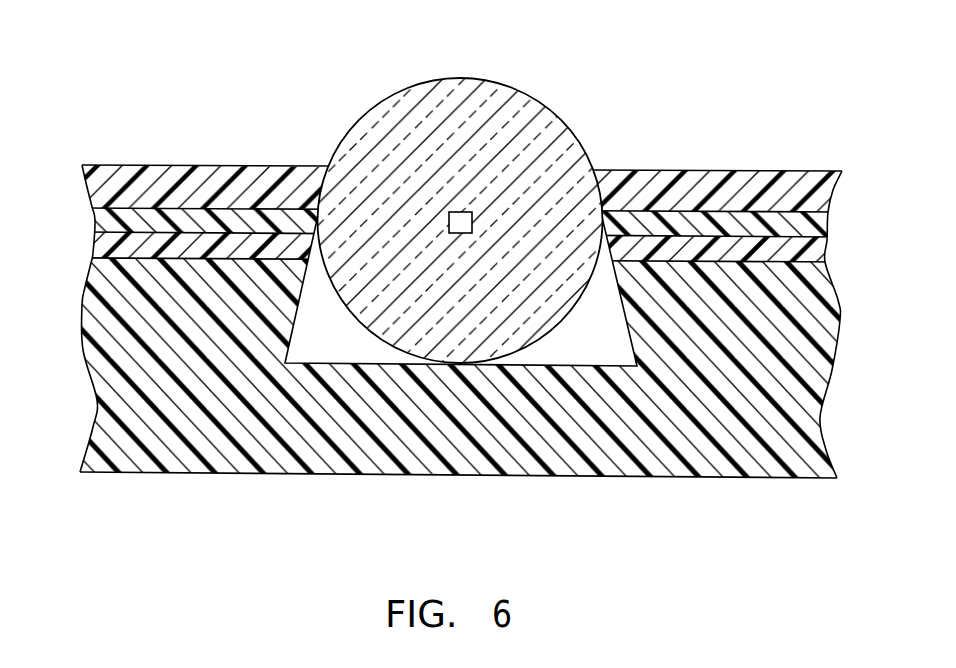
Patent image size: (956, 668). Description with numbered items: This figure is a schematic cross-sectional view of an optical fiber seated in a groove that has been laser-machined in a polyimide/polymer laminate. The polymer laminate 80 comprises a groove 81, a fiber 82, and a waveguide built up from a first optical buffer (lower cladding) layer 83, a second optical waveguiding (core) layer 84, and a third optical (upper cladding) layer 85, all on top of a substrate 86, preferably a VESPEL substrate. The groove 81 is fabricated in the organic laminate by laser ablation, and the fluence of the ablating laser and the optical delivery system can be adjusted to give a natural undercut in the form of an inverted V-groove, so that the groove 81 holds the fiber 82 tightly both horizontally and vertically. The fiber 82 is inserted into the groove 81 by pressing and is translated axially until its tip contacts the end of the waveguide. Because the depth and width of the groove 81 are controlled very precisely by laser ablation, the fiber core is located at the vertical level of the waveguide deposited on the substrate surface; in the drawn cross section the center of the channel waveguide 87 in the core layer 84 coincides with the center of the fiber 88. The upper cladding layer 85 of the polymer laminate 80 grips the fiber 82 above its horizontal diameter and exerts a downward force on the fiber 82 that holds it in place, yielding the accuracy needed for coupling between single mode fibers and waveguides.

The polymer laminate 80 is at (695, 145).
The groove 81 is at (288, 342).
The fiber 82 is at (579, 313).
The first optical buffer (lower cladding) layer 83 is at (92, 239).
The second optical waveguiding (core) layer 84 is at (94, 216).
The third optical (upper cladding) layer 85 is at (86, 178).
The substrate 86 is at (403, 477).
The center of the channel waveguide 87 is at (460, 211).
The center of the fiber 88 is at (457, 223).